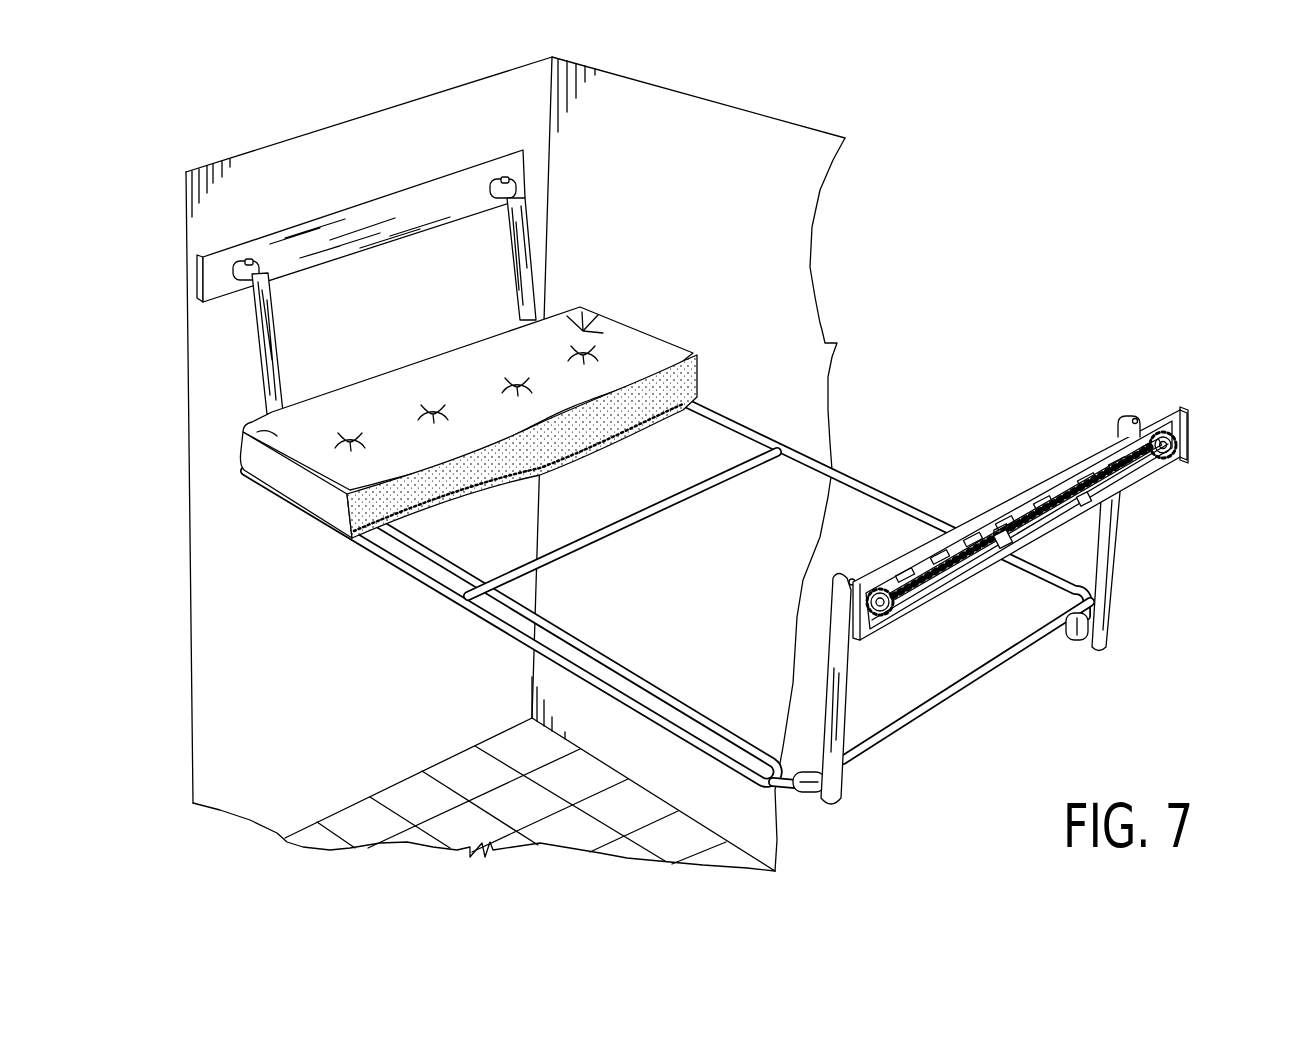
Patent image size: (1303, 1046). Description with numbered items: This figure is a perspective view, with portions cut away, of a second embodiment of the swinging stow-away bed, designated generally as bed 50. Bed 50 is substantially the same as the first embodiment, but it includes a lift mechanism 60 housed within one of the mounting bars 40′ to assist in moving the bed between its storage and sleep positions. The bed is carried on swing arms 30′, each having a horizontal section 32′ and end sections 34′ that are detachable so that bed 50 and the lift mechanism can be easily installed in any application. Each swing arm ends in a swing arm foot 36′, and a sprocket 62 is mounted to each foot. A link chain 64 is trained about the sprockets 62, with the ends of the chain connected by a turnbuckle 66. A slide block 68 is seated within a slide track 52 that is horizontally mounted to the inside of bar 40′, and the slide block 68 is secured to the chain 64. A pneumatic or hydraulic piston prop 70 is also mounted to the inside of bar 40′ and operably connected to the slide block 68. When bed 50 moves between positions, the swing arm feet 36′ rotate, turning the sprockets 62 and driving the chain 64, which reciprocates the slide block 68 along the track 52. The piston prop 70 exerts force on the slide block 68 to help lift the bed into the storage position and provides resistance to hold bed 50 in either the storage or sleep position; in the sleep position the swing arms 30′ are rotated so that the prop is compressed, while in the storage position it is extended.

The swing arm 30′ is at (667, 562).
The horizontal section 32′ is at (640, 677).
The end section 34′ is at (275, 360).
The swing arm foot 36′ is at (1130, 420).
The mounting bar 40′ is at (433, 181).
The stow-away bed 50 is at (1057, 514).
The slide track 52 is at (950, 572).
The lift mechanism 60 is at (1057, 565).
The sprocket 62 is at (1173, 462).
The link chain 64 is at (1140, 483).
The turnbuckle 66 is at (1007, 513).
The slide block 68 is at (1012, 548).
The piston prop 70 is at (1083, 504).